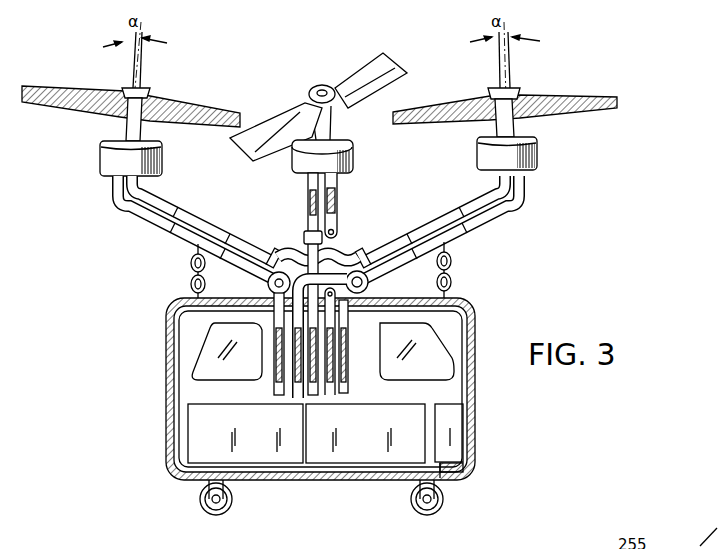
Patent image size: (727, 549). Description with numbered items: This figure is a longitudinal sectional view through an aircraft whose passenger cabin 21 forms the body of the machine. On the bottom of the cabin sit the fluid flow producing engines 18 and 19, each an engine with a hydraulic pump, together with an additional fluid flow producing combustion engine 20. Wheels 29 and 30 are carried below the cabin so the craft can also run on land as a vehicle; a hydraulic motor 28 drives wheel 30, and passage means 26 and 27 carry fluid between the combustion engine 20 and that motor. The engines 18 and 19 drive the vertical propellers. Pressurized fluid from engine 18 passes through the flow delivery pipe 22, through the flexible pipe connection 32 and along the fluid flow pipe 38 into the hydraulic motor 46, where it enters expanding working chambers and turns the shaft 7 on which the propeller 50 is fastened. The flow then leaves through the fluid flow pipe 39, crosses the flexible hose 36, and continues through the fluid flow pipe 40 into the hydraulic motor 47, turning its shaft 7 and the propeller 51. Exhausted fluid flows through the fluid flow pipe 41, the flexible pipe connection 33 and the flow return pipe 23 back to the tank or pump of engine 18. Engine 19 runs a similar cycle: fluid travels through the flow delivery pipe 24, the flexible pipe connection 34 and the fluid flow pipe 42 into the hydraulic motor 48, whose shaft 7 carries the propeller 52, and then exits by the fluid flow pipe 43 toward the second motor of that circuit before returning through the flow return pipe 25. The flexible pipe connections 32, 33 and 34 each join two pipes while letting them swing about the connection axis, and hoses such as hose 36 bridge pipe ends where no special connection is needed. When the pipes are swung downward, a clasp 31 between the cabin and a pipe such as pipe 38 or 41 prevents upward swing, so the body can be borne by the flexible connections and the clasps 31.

The shaft 7 is at (138, 132).
The fluid flow producing engine 18 is at (197, 432).
The fluid flow producing engine 19 is at (367, 413).
The fluid flow producing combustion engine 20 is at (460, 418).
The passenger cabin 21 is at (192, 343).
The flow delivery pipe 22 is at (277, 383).
The flow return pipe 23 is at (293, 358).
The flow delivery pipe 24 is at (317, 338).
The flow return pipe 25 is at (330, 360).
The passage means 26 is at (448, 478).
The passage means 27 is at (463, 467).
The hydraulic motor 28 is at (412, 500).
The wheel 29 is at (233, 500).
The wheel 30 is at (415, 508).
The clasp 31 is at (190, 272).
The flexible pipe connection 32 is at (276, 297).
The flexible pipe connection 33 is at (374, 293).
The flexible pipe connection 34 is at (305, 236).
The flexible hose 36 is at (342, 257).
The fluid flow pipe 38 is at (165, 223).
The fluid flow pipe 39 is at (200, 216).
The fluid flow pipe 40 is at (430, 224).
The fluid flow pipe 41 is at (460, 236).
The fluid flow pipe 42 is at (307, 198).
The fluid flow pipe 43 is at (334, 202).
The hydraulic motor 46 is at (108, 157).
The hydraulic motor 47 is at (539, 153).
The hydraulic motor 48 is at (351, 151).
The propeller 50 is at (84, 113).
The propeller 51 is at (538, 107).
The propeller 52 is at (270, 122).